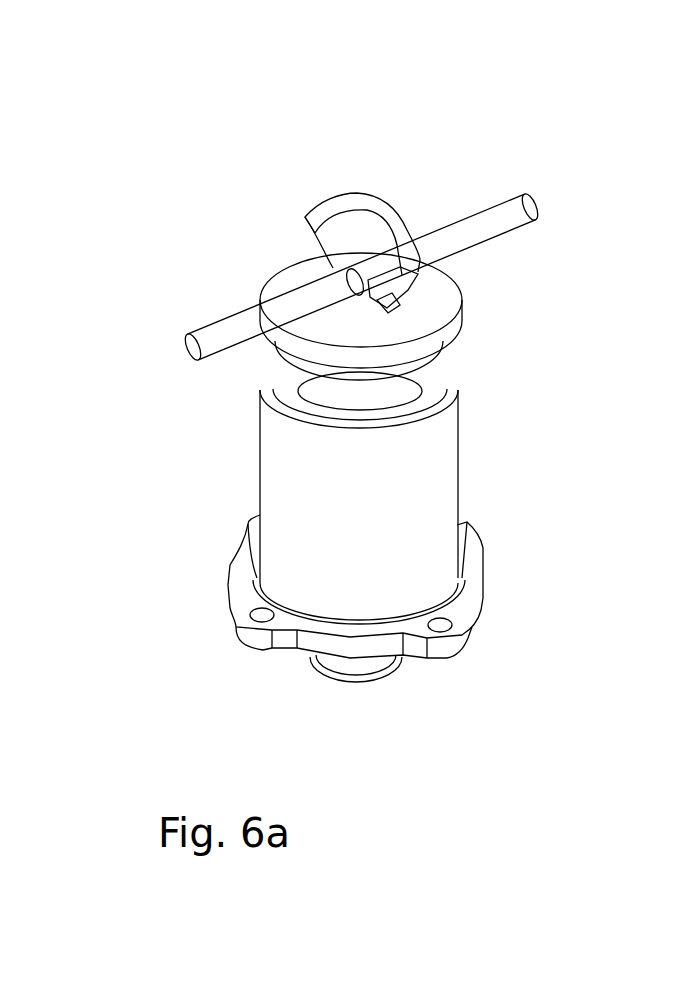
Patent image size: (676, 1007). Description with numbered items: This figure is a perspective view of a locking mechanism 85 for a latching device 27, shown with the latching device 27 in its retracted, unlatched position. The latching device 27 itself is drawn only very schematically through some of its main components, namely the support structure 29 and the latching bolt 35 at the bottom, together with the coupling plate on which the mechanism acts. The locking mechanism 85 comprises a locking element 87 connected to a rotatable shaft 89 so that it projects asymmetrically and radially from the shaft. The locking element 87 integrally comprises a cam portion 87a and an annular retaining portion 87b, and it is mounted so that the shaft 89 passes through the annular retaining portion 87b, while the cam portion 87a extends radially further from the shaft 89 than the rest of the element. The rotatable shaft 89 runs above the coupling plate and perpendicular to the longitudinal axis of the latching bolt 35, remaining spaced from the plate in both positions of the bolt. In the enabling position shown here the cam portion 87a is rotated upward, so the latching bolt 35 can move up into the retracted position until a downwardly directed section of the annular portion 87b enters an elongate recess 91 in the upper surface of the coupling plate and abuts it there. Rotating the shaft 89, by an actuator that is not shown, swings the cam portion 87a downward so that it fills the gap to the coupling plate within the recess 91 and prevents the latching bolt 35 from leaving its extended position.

The latching device 27 is at (195, 480).
The support structure 29 is at (440, 480).
The latching bolt 35 is at (360, 668).
The locking mechanism 85 is at (228, 168).
The locking element 87 is at (340, 178).
The cam portion 87a is at (383, 220).
The annular retaining portion 87b is at (375, 292).
The rotatable shaft 89 is at (520, 202).
The elongate recess 91 is at (400, 308).